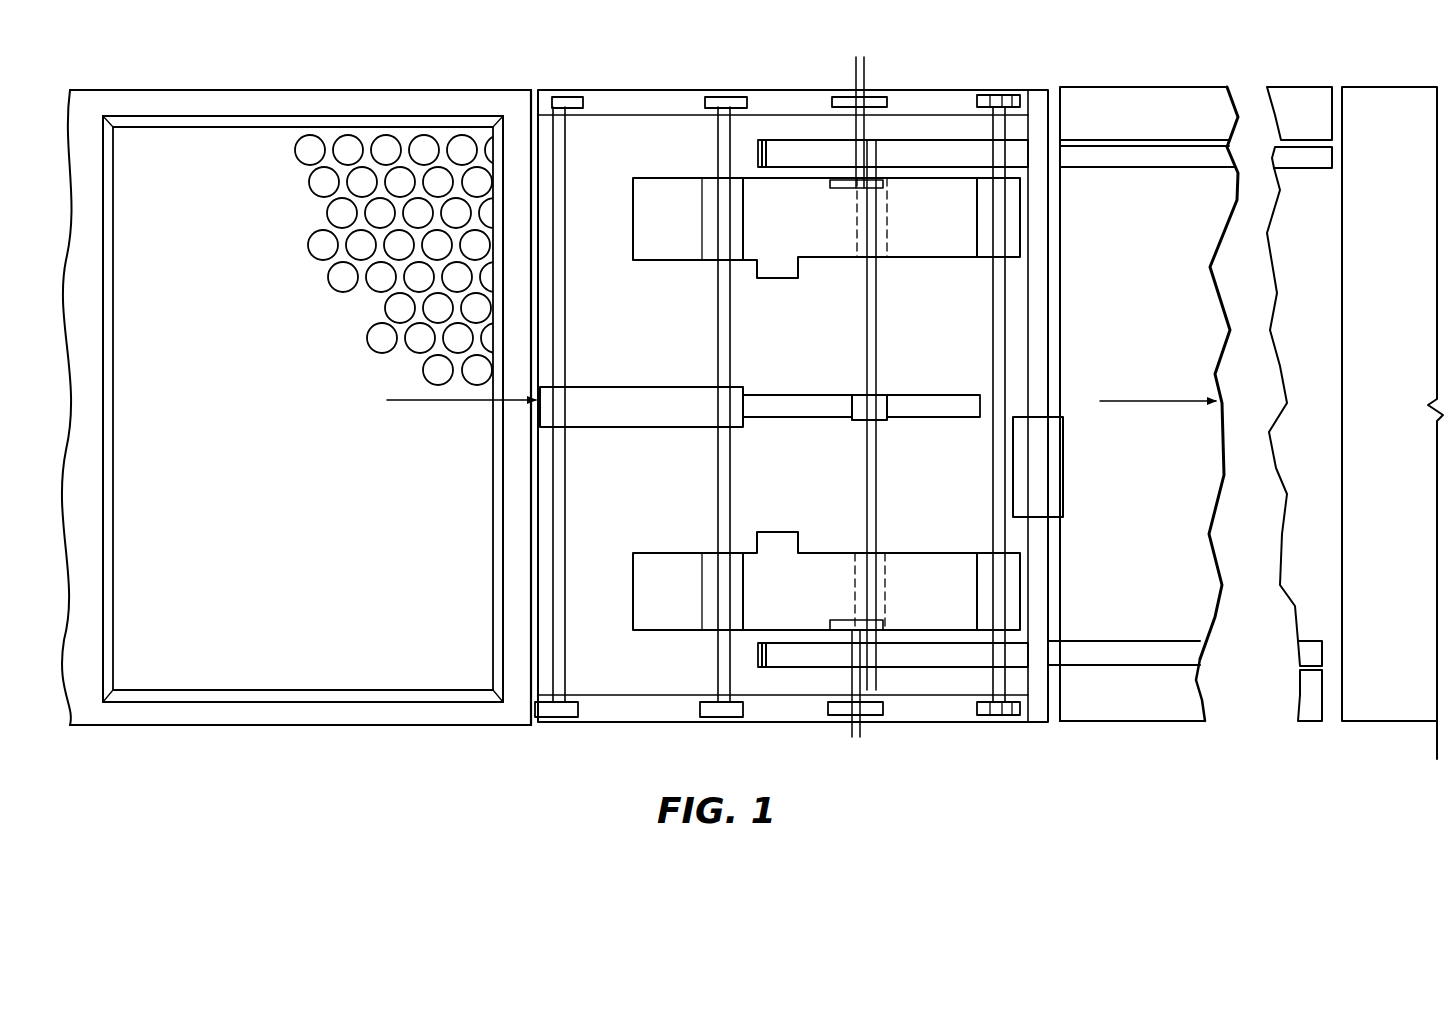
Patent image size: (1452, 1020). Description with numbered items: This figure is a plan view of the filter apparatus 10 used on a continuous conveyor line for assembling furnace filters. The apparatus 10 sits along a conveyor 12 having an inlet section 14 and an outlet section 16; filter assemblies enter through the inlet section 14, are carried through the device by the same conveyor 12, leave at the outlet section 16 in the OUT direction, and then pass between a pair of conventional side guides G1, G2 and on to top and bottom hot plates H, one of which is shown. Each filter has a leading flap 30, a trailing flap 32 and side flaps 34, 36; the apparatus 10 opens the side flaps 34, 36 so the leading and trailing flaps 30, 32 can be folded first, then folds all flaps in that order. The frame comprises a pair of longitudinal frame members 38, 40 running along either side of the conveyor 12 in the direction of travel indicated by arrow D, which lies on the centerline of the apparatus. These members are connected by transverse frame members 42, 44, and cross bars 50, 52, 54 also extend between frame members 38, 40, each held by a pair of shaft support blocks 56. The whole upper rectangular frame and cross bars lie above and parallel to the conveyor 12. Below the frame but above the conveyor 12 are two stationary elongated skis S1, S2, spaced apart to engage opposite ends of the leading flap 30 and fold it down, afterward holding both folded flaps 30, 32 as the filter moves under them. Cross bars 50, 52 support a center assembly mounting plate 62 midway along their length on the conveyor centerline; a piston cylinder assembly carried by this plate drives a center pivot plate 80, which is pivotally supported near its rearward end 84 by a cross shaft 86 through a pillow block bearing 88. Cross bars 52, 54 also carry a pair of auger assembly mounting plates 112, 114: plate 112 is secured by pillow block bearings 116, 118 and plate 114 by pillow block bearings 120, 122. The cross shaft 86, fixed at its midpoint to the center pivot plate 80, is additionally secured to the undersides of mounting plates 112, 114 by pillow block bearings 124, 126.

The filter apparatus 10 is at (500, 733).
The conveyor 12 is at (308, 728).
The inlet section 14 is at (432, 735).
The outlet section 16 is at (1196, 610).
The leading flap 30 is at (497, 533).
The trailing flap 32 is at (104, 568).
The side flap 34 is at (228, 127).
The side flap 36 is at (228, 692).
The longitudinal frame member 38 is at (643, 717).
The longitudinal frame member 40 is at (641, 102).
The transverse frame member 42 is at (533, 133).
The transverse frame member 44 is at (1040, 288).
The cross bar 50 is at (556, 467).
The cross bar 52 is at (726, 480).
The cross bar 54 is at (994, 460).
The shaft support block 56 is at (560, 97).
The center assembly mounting plate 62 is at (677, 398).
The center pivot plate 80 is at (792, 402).
The rearward end 84 is at (905, 408).
The cross shaft 86 is at (872, 516).
The pillow block bearing 88 is at (872, 402).
The auger assembly mounting plate 112 is at (940, 574).
The auger assembly mounting plate 114 is at (907, 240).
The pillow block bearing 116 is at (702, 556).
The pillow block bearing 118 is at (985, 620).
The pillow block bearing 120 is at (714, 187).
The pillow block bearing 122 is at (985, 252).
The pillow block bearing 124 is at (887, 598).
The pillow block bearing 126 is at (889, 220).
The direction of travel arrow D is at (446, 404).
The ski S1 is at (795, 664).
The ski S2 is at (925, 157).
The side guide G1 is at (1208, 108).
The side guide G2 is at (1163, 712).
The hot plate H is at (1372, 105).
The output direction OUT is at (1158, 382).